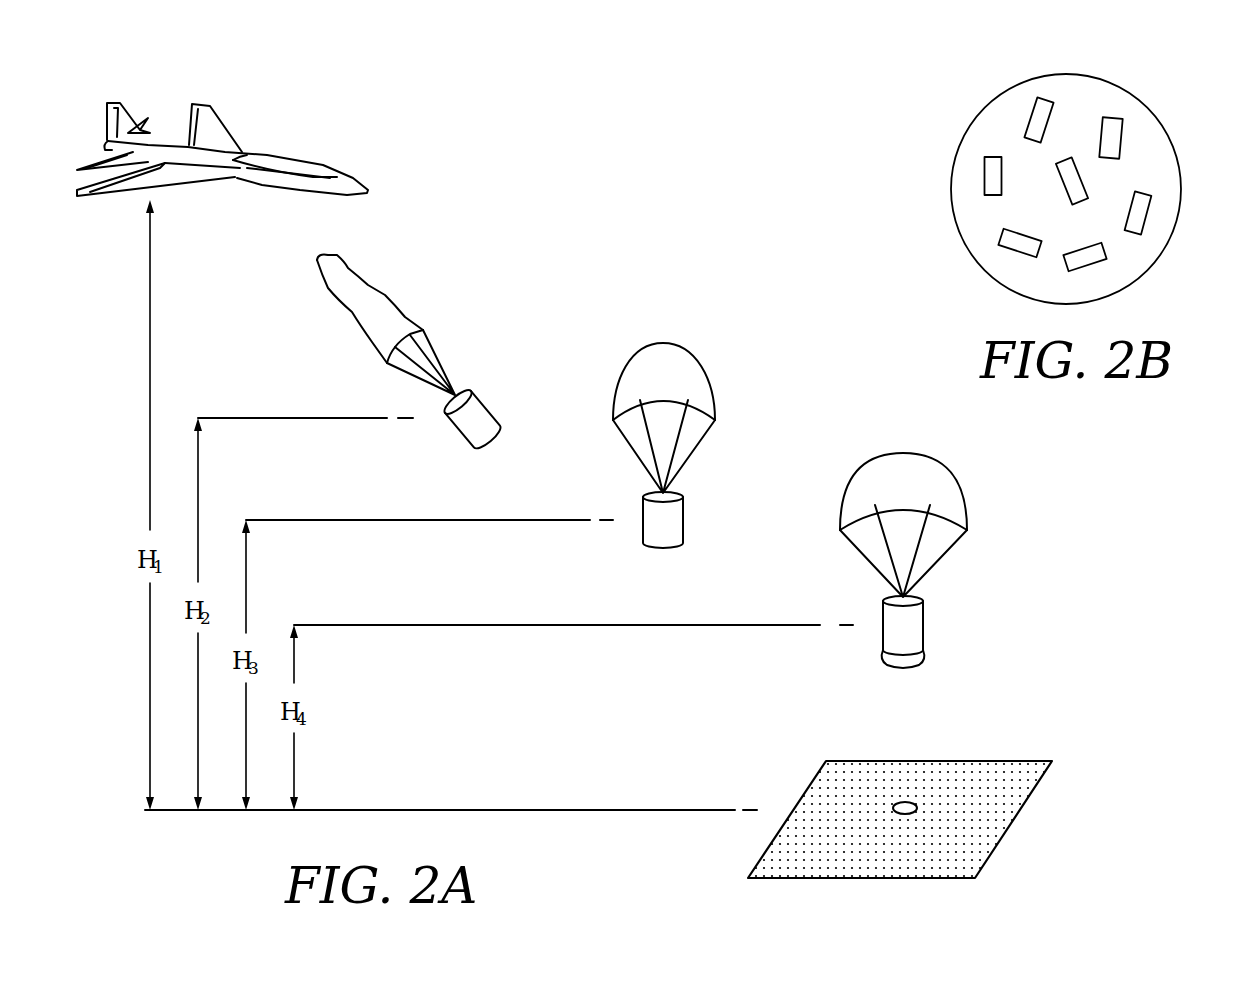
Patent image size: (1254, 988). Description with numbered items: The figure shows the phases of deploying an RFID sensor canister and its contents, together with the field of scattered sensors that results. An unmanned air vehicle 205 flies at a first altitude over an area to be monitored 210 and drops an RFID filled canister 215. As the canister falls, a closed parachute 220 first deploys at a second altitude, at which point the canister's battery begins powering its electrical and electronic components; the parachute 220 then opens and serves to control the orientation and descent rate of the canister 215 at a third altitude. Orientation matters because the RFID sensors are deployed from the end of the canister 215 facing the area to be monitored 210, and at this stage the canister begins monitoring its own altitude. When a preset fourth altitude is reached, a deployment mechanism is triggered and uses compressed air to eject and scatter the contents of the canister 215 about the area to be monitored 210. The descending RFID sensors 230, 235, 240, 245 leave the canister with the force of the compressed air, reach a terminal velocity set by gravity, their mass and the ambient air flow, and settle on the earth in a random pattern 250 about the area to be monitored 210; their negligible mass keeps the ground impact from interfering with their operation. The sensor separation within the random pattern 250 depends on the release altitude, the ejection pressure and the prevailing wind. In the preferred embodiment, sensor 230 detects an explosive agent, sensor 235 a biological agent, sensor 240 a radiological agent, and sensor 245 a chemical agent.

In FIG. 2A, the unmanned air vehicle (UAV) 205 is at (292, 160).
In FIG. 2A, the area to be monitored 210 is at (822, 768).
In FIG. 2A, the RFID filled canister 215 is at (485, 413).
In FIG. 2A, the parachute 220 is at (387, 310).
In FIG. 2B, the RFID sensor 230 is at (990, 158).
In FIG. 2B, the RFID sensor 235 is at (1110, 120).
In FIG. 2B, the RFID sensor 240 is at (1080, 202).
In FIG. 2B, the RFID sensor 245 is at (1012, 241).
In FIG. 2A, the random pattern 250 is at (905, 803).
In FIG. 2B, the random pattern 250 is at (962, 134).